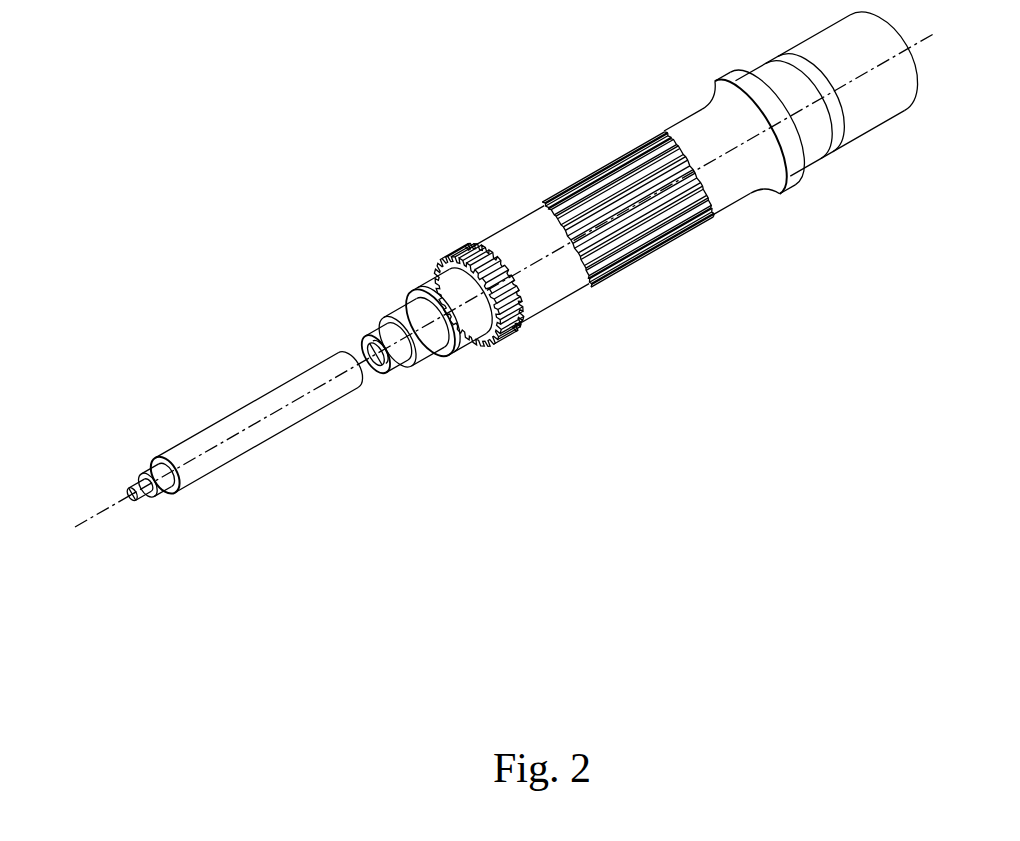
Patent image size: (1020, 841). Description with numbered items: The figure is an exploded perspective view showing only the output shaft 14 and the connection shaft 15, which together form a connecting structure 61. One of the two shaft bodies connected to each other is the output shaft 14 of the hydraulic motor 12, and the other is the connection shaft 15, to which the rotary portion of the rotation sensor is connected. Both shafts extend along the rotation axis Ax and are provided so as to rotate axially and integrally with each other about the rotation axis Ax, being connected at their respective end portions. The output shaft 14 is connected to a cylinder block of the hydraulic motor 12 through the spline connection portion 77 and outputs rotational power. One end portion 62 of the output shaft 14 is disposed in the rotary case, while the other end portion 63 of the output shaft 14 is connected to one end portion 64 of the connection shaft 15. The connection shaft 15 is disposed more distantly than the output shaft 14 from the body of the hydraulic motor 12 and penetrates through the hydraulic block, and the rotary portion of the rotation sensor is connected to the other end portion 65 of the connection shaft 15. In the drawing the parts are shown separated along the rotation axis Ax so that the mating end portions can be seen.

The connecting structure 61 is at (300, 195).
The output shaft 14 is at (500, 219).
The hydraulic motor 12 is at (647, 238).
The connection shaft 15 is at (221, 394).
The one end portion 62 is at (897, 139).
The other end portion 63 is at (394, 384).
The one end portion 64 is at (363, 396).
The other end portion 65 is at (146, 517).
The spline connection portion 77 is at (658, 264).
The rotation axis Ax is at (98, 516).